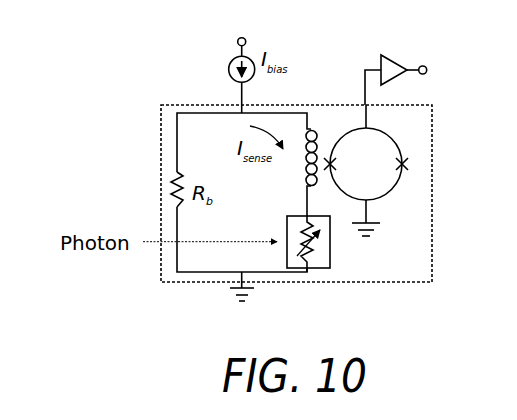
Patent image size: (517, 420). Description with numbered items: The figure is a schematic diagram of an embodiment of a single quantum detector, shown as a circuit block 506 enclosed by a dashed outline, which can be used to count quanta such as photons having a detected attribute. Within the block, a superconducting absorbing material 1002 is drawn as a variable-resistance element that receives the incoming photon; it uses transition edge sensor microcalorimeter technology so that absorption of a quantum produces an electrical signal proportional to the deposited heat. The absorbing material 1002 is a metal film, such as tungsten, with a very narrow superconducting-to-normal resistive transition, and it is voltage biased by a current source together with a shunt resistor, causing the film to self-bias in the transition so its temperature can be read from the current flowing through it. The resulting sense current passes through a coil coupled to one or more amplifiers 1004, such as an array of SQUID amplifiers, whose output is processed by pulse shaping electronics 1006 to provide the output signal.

The photon detection circuit 506 is at (114, 57).
The superconducting absorbing material 1002 is at (330, 264).
The amplifiers 1004 is at (404, 174).
The pulse shaping electronics 1006 is at (383, 56).